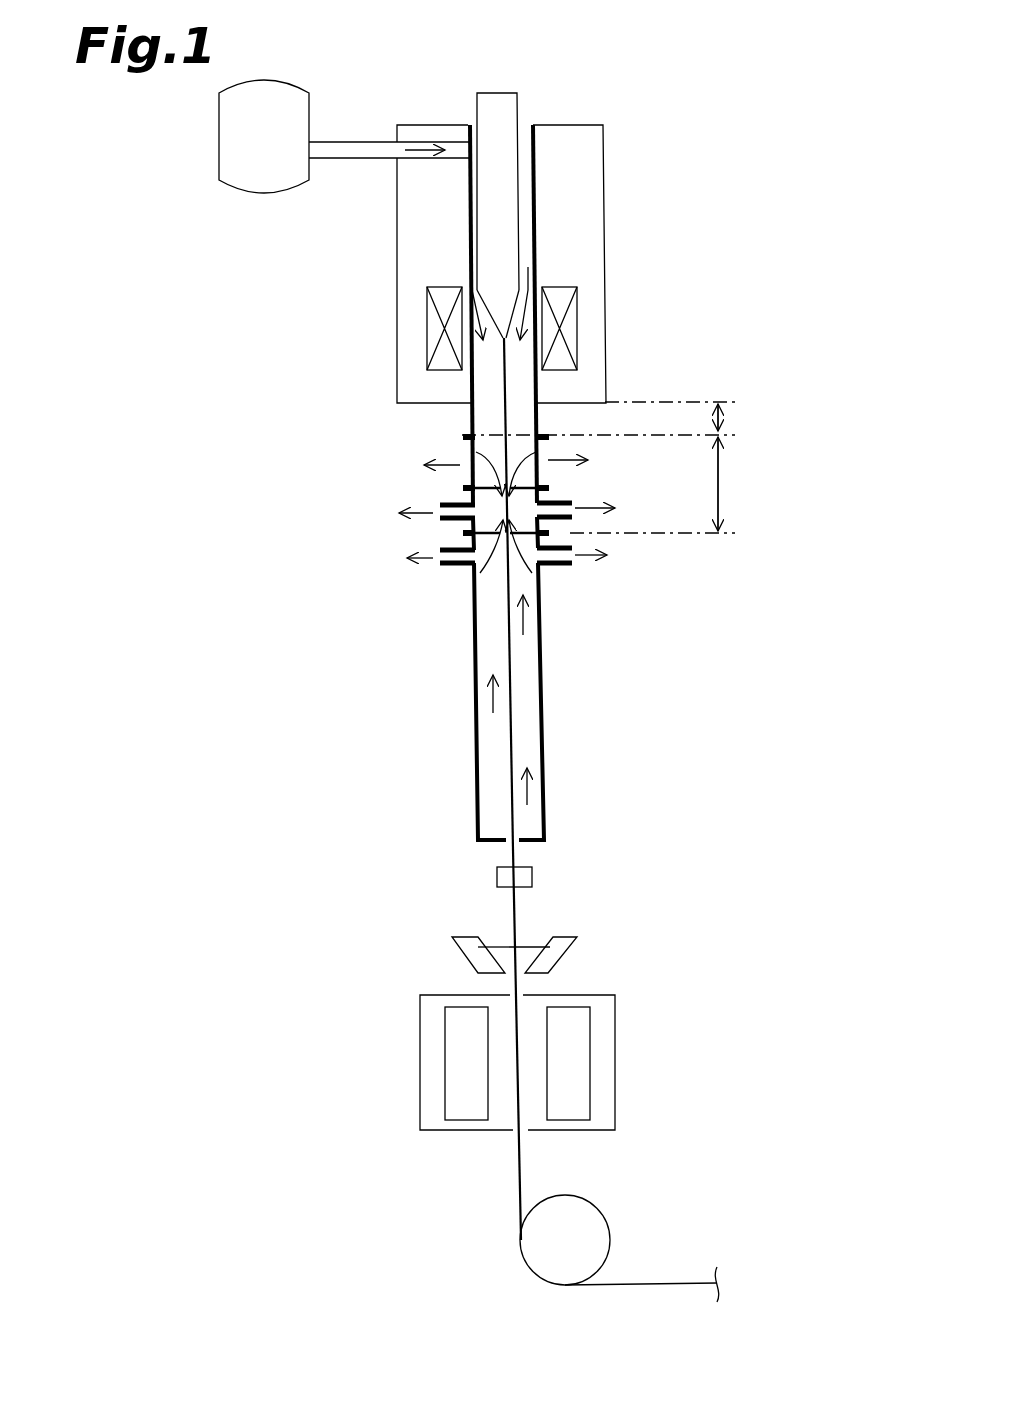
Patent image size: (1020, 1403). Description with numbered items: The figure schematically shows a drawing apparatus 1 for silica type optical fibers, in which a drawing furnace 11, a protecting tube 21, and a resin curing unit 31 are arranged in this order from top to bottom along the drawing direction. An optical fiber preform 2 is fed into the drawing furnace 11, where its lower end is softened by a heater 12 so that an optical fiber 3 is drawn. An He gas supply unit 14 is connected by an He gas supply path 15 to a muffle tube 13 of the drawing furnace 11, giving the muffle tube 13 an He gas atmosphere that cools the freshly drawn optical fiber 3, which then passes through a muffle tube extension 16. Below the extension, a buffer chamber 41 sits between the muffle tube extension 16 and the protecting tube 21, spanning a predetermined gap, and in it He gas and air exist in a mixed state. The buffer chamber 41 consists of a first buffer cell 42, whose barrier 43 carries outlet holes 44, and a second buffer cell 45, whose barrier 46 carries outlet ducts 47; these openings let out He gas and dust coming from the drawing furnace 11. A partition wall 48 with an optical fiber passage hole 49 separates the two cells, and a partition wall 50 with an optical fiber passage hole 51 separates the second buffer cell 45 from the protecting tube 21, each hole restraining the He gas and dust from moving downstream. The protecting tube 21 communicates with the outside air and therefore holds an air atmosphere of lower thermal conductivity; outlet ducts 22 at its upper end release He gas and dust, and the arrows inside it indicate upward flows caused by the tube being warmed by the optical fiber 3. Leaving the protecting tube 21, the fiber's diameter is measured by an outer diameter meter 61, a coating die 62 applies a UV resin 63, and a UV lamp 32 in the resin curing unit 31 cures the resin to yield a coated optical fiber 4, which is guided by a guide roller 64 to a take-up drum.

The drawing apparatus 1 is at (720, 73).
The optical fiber preform 2 is at (537, 100).
The optical fiber 3 is at (507, 643).
The coated optical fiber 4 is at (520, 1172).
The drawing furnace 11 is at (546, 261).
The heater 12 is at (577, 347).
The muffle tube 13 is at (537, 197).
The He gas supply unit 14 is at (282, 148).
The He gas supply path 15 is at (363, 160).
The muffle tube extension 16 is at (470, 418).
The protecting tube 21 is at (494, 482).
The outlet ducts 22 is at (448, 568).
The resin curing unit 31 is at (570, 1057).
The UV lamp 32 is at (590, 1095).
The buffer chamber 41 is at (503, 522).
The first buffer cell 42 is at (466, 450).
The barrier 43 is at (538, 452).
The outlet holes 44 is at (470, 464).
The second buffer cell 45 is at (464, 523).
The barrier 46 is at (545, 532).
The outlet ducts 47 is at (460, 500).
The partition wall 48 is at (540, 517).
The optical fiber passage hole 49 is at (539, 452).
The partition wall 50 is at (490, 538).
The optical fiber passage hole 51 is at (516, 540).
The outer diameter meter 61 is at (535, 878).
The coating die 62 is at (555, 947).
The UV resin 63 is at (500, 956).
The guide roller 64 is at (528, 1238).